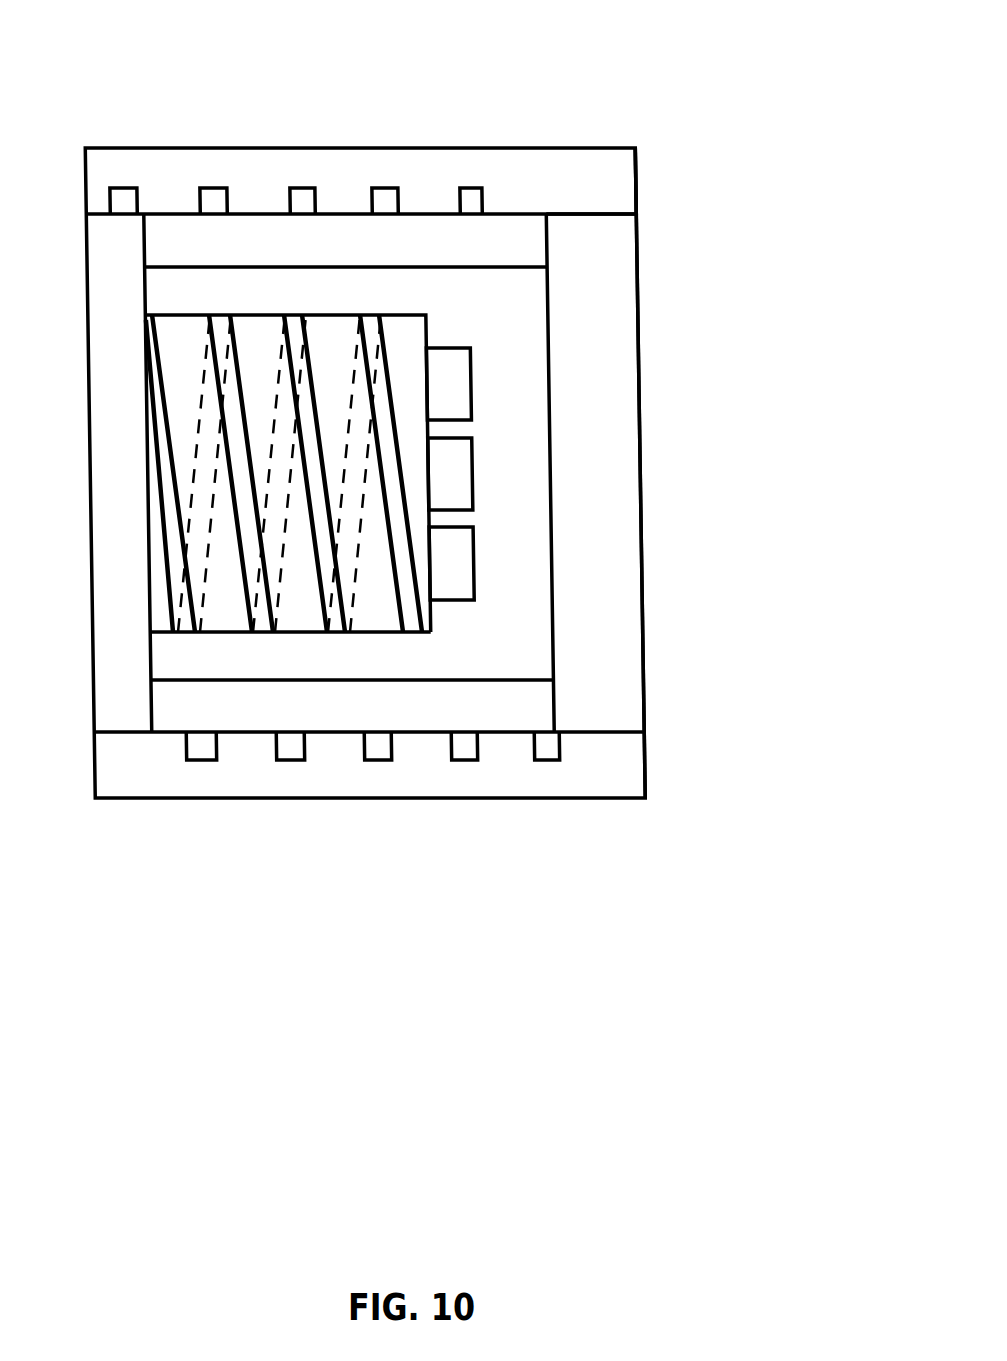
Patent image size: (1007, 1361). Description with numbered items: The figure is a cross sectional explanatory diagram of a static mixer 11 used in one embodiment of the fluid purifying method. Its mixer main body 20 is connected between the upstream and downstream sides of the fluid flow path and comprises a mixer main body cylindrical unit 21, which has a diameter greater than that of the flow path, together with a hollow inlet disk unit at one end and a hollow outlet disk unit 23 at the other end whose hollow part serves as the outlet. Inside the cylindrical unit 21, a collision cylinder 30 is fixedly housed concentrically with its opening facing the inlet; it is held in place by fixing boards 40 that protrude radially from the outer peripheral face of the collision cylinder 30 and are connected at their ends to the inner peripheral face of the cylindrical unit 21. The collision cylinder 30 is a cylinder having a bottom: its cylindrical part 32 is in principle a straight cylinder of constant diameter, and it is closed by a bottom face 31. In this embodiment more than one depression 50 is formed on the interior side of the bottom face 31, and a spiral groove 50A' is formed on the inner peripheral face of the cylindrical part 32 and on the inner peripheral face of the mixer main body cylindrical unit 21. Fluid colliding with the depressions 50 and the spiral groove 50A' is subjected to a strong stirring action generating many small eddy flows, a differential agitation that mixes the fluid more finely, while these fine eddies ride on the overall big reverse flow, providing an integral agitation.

The static mixer 11 is at (655, 137).
The mixer main body 20 is at (286, 147).
The mixer main body cylindrical unit 21 is at (562, 185).
The hollow outlet disk unit 23 is at (643, 479).
The collision cylinder 30 is at (192, 683).
The bottom face 31 is at (512, 308).
The cylindrical part 32 is at (412, 653).
The fixing boards 40 is at (182, 242).
The depression 50 is at (453, 387).
The spiral groove 50A' is at (335, 389).